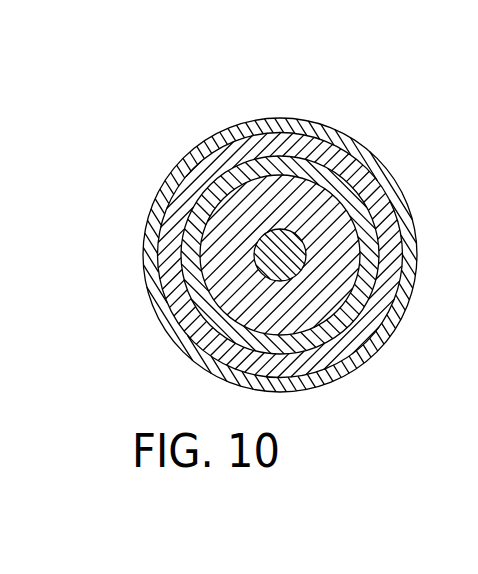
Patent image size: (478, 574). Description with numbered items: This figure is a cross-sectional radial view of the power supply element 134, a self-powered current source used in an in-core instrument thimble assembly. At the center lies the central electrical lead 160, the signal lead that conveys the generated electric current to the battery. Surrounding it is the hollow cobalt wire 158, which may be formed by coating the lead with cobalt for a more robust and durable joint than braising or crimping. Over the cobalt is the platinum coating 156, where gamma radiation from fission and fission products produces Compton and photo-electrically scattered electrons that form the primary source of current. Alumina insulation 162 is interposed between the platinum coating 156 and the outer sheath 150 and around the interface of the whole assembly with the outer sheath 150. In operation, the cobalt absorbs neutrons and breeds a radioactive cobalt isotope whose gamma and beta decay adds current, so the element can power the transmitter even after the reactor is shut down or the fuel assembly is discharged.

The power supply element 134 is at (278, 255).
The outer sheath 150 is at (382, 162).
The alumina insulation 162 is at (329, 145).
The hollow cobalt-59 wire 158 is at (220, 178).
The platinum coating 156 is at (270, 157).
The central electrical lead 160 is at (257, 262).